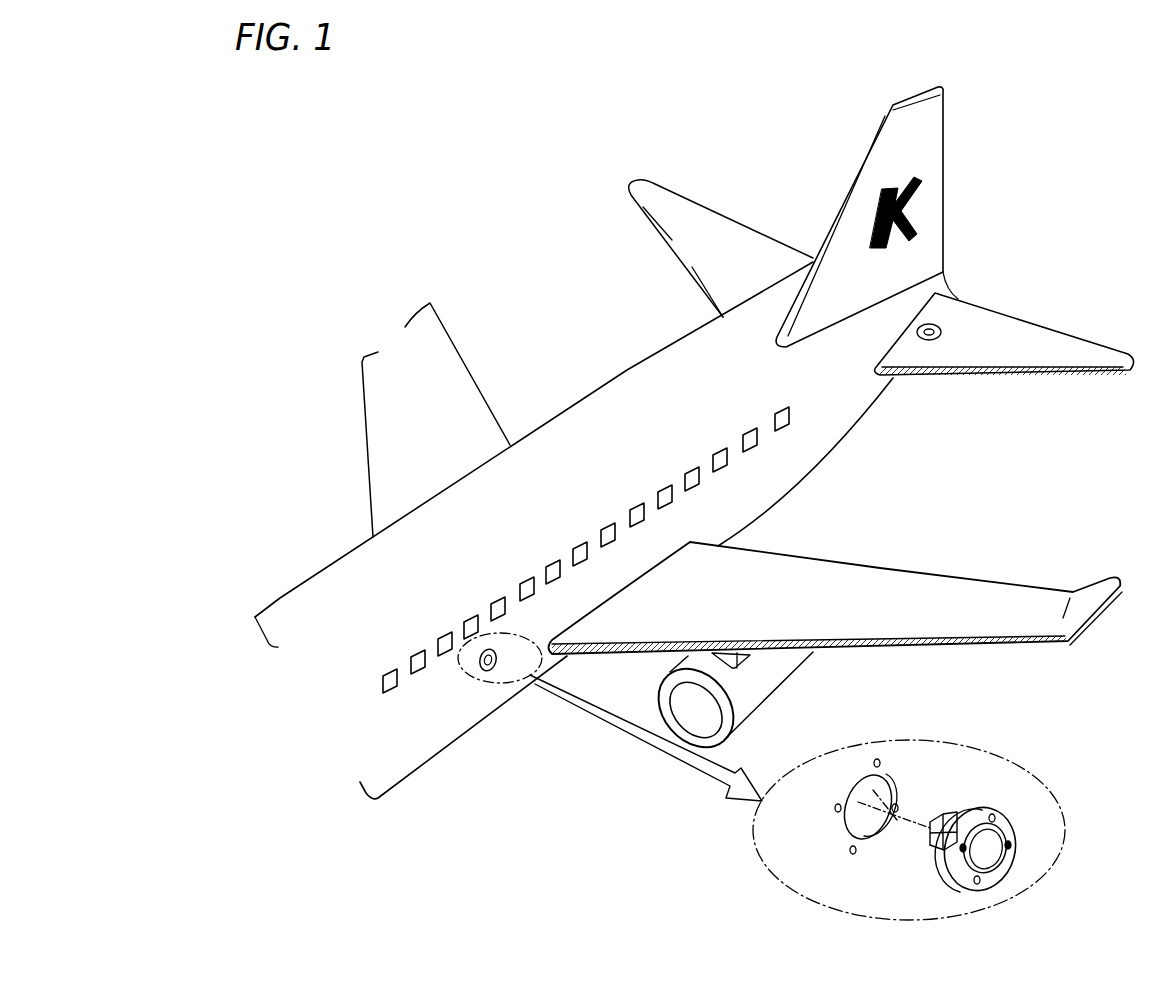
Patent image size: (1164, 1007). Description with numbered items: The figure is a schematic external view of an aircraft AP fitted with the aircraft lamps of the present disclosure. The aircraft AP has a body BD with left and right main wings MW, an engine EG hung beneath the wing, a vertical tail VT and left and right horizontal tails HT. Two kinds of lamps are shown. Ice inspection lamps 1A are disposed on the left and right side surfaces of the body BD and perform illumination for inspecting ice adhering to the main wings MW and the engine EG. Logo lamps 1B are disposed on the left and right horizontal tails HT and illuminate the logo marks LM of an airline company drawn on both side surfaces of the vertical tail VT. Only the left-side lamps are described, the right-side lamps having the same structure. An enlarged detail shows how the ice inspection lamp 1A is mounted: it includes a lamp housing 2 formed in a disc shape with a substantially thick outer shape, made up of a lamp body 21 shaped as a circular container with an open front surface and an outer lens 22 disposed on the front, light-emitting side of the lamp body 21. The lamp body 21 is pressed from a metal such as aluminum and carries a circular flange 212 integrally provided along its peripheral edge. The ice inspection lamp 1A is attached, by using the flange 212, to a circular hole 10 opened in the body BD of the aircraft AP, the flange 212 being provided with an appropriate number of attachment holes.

The aircraft AP is at (694, 513).
The body BD is at (786, 474).
The vertical tail VT is at (886, 217).
The logo mark LM is at (910, 220).
The horizontal tail HT is at (1004, 349).
The logo lamp 1B is at (935, 341).
The main wing MW is at (902, 588).
The engine EG is at (745, 712).
The ice inspection lamp 1A is at (496, 667).
The circular hole 10 is at (895, 774).
The lamp housing 2 is at (1032, 809).
The lamp body 21 is at (950, 810).
The flange 212 is at (1047, 875).
The outer lens 22 is at (1005, 865).